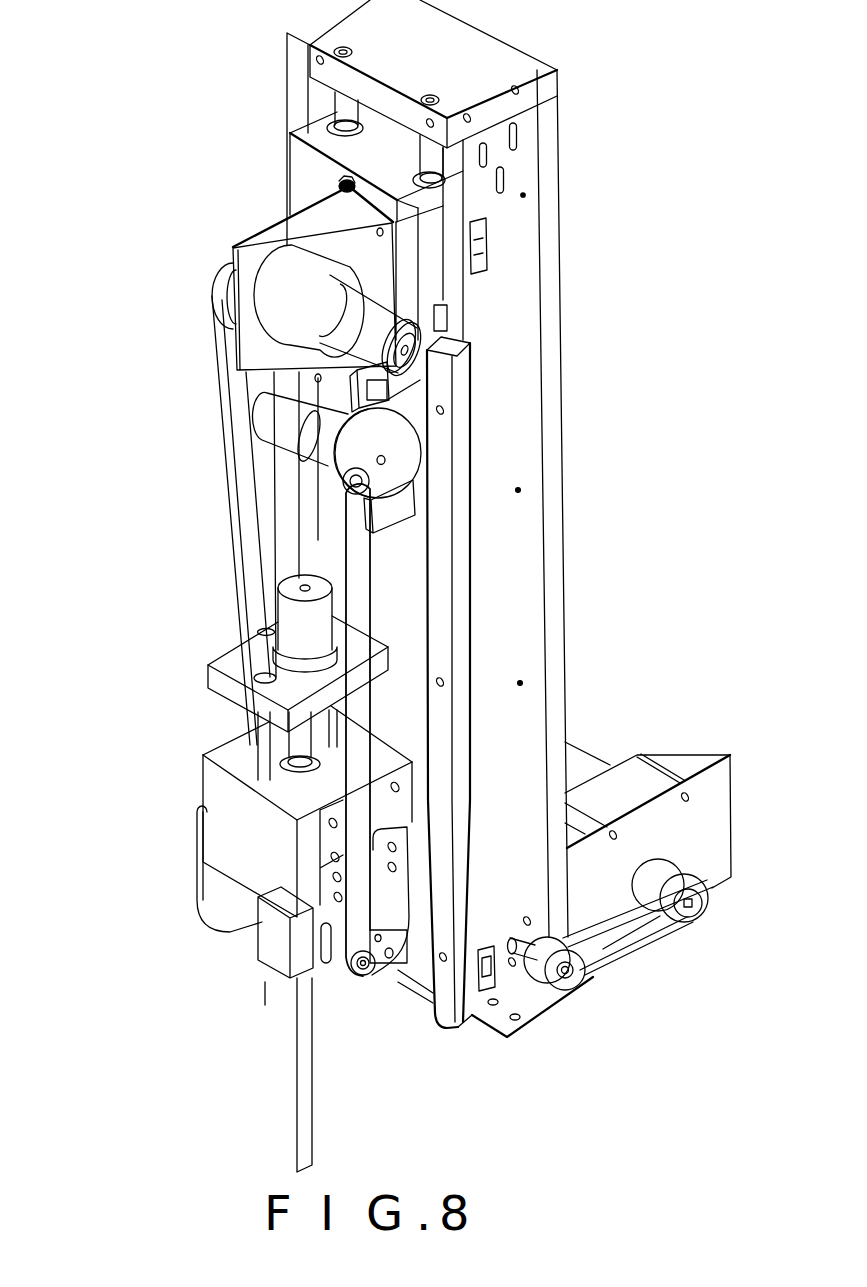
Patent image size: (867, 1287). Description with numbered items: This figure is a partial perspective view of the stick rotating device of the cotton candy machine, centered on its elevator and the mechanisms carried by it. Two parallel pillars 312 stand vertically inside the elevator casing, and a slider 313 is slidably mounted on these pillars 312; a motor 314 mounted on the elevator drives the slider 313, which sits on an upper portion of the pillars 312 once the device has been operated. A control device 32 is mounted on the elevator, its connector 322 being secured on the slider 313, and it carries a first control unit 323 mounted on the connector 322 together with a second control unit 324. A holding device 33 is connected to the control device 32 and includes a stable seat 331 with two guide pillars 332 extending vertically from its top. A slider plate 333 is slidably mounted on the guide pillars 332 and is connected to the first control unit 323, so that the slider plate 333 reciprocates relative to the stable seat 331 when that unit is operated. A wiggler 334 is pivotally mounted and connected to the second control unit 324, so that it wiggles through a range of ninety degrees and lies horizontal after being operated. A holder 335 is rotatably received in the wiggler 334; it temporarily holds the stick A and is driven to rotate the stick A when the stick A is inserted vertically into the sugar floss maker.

The pillars 312 is at (350, 103).
The slider 313 is at (318, 175).
The motor 314 is at (642, 782).
The control device 32 is at (447, 354).
The connector 322 is at (302, 226).
The first control unit 323 is at (407, 303).
The second control unit 324 is at (465, 456).
The holding device 33 is at (218, 815).
The stable seat 331 is at (225, 840).
The guide pillars 332 is at (263, 775).
The slider plate 333 is at (218, 684).
The wiggler 334 is at (268, 949).
The holder 335 is at (262, 1008).
The stick A is at (307, 1107).